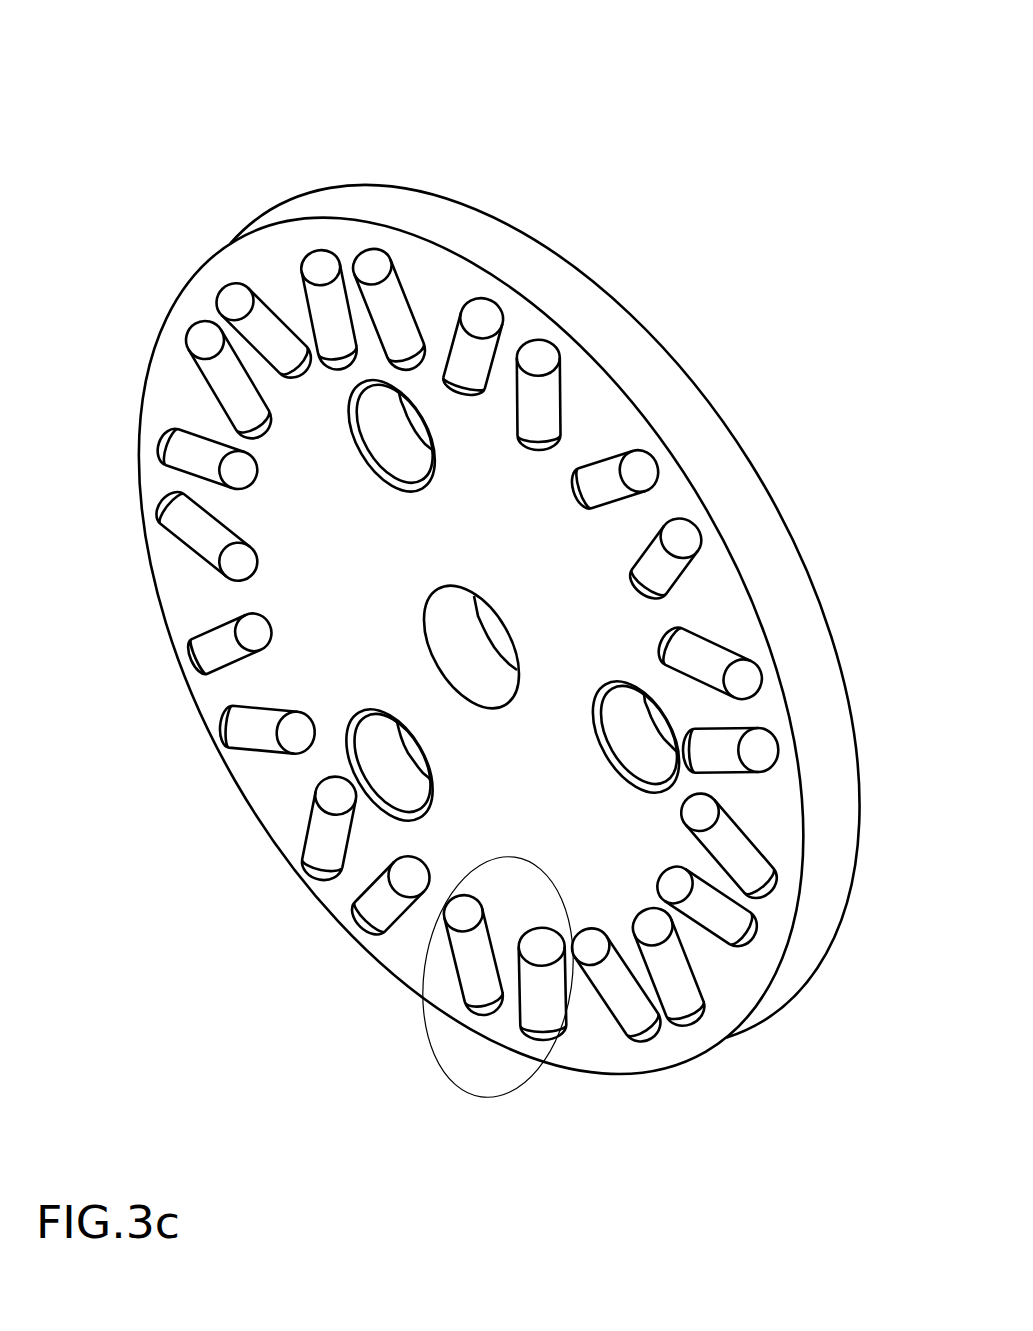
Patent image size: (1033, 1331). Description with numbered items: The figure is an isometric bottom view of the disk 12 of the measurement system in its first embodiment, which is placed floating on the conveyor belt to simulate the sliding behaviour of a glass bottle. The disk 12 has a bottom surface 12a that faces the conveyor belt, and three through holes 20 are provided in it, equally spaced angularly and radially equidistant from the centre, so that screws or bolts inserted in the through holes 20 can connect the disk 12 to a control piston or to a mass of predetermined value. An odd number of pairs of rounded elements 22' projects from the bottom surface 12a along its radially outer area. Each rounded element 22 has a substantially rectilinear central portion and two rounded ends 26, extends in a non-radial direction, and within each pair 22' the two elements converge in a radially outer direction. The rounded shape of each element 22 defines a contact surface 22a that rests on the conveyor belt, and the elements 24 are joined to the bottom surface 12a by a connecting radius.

The disk 12 is at (393, 150).
The bottom surface 12a is at (513, 510).
The through holes 20 is at (383, 432).
The rounded element 22 is at (408, 986).
The pair of rounded elements 22' is at (474, 1015).
The contact surface 22a is at (543, 995).
The pin 24 is at (300, 838).
The rounded end 26 is at (340, 802).